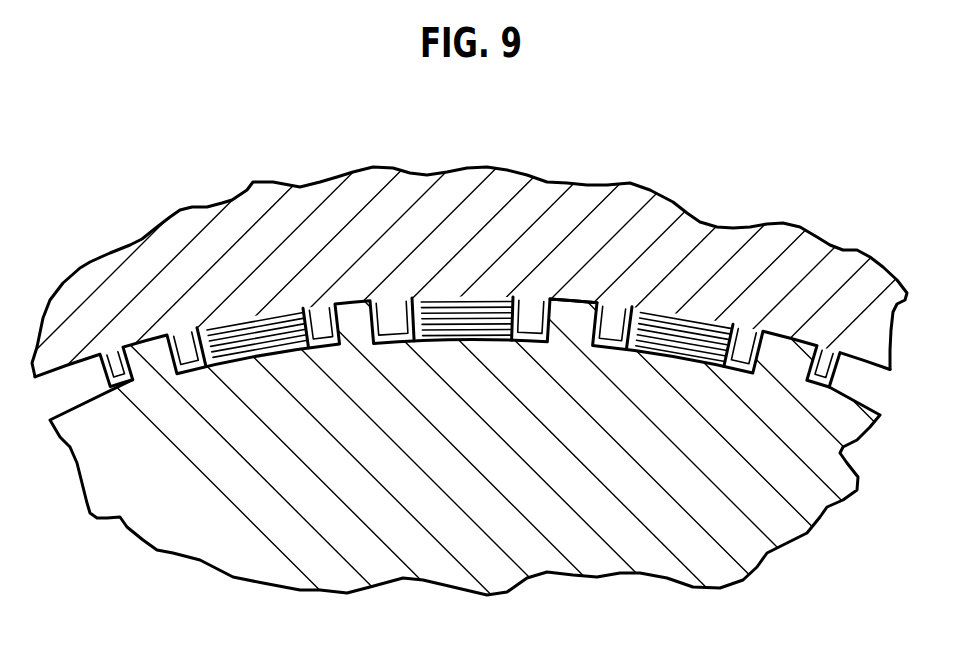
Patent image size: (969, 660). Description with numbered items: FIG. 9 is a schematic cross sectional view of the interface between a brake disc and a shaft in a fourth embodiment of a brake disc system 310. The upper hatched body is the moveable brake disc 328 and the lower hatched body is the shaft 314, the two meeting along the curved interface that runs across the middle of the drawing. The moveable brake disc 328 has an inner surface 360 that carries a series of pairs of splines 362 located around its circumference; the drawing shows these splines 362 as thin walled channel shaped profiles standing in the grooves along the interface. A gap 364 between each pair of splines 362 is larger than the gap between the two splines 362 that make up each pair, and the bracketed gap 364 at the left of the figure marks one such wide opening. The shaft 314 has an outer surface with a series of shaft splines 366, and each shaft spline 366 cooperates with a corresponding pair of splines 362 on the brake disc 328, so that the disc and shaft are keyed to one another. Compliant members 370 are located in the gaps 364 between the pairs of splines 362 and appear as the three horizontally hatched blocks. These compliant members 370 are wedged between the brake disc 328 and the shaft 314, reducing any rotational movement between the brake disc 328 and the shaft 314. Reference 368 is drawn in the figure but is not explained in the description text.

The brake disc system 310 is at (690, 158).
The shaft 314 is at (472, 508).
The moveable brake disc 328 is at (501, 246).
The inner surface 360 is at (57, 378).
The splines 362 is at (195, 348).
The gap 364 is at (307, 312).
The shaft splines 366 is at (574, 320).
The retaining wall 368 is at (318, 300).
The compliant members 370 is at (468, 325).